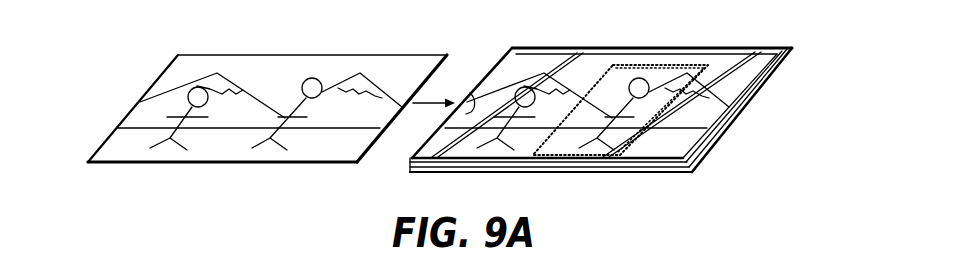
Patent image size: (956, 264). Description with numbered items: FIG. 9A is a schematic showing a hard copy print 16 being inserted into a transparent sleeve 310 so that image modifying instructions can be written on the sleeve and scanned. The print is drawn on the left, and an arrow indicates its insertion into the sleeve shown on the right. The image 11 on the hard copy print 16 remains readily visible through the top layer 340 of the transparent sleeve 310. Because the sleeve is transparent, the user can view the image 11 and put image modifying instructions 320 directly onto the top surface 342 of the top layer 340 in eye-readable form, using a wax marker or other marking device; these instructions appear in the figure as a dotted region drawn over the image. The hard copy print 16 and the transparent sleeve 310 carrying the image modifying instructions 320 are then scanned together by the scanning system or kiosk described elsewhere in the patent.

The image 11 is at (265, 68).
The hard copy print 16 is at (389, 56).
The transparent sleeve 310 is at (559, 47).
The image modifying instructions 320 is at (631, 63).
The top layer 340 is at (793, 48).
The top surface 342 is at (697, 60).